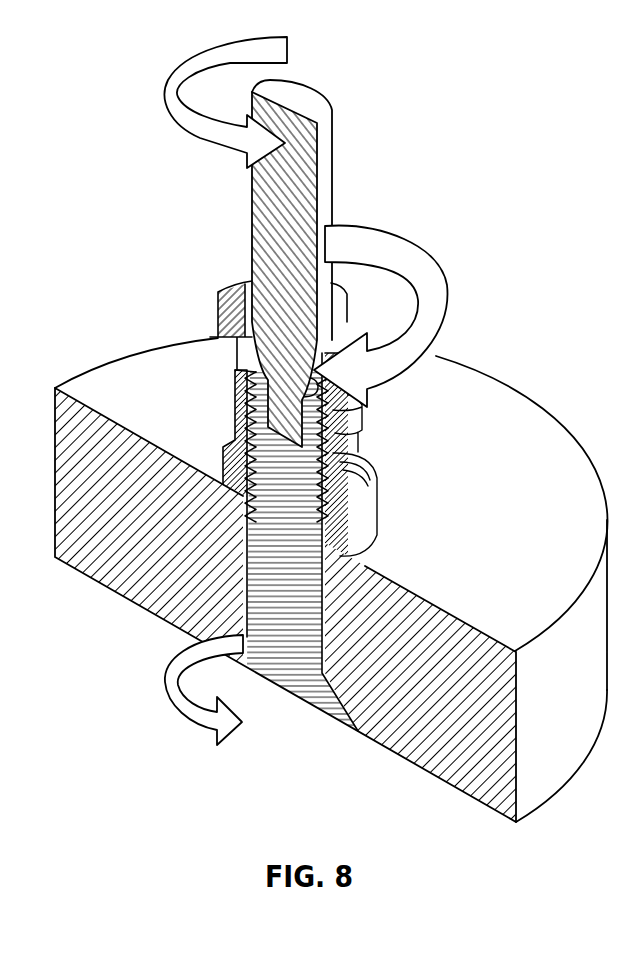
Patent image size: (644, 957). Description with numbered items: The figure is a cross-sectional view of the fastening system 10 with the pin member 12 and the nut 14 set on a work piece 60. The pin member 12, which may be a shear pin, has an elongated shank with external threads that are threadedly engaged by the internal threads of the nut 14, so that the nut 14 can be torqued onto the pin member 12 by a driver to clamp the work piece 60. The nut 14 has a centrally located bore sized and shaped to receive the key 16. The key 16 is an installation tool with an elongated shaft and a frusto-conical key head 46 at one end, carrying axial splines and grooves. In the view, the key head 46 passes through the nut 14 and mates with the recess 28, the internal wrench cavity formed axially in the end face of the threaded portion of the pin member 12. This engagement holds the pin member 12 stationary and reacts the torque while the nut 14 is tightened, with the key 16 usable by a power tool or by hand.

The fastening system 10 is at (338, 429).
The pin member 12 is at (303, 623).
The nut 14 is at (218, 320).
The key 16 is at (263, 218).
The recess 28 is at (247, 422).
The key head 46 is at (250, 392).
The work piece 60 is at (528, 427).